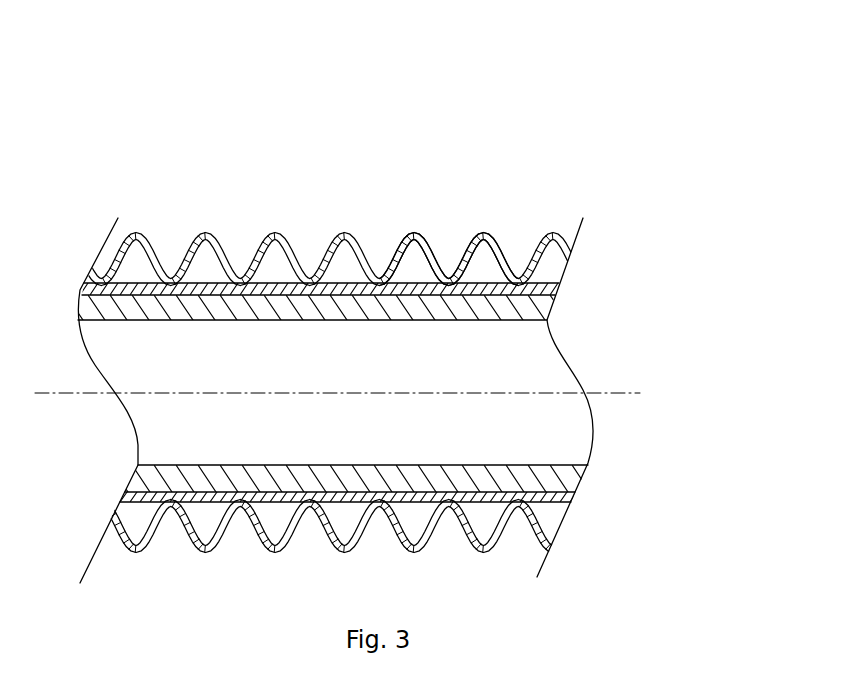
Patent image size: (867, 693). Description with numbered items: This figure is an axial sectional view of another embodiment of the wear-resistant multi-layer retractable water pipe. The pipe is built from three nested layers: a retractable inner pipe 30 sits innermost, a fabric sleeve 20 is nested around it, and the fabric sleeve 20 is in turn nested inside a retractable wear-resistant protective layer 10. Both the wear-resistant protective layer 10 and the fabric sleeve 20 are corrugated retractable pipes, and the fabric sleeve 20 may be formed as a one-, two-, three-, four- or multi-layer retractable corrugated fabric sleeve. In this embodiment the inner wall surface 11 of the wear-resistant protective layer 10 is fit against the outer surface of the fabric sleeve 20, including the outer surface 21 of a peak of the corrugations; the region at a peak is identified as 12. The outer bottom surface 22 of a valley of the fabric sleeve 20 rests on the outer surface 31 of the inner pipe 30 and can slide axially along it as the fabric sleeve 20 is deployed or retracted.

The wear-resistant protective layer 10 is at (292, 248).
The inner wall surface 11 is at (410, 320).
The trough of corrugation 12 is at (475, 263).
The fabric sleeve 20 is at (134, 285).
The outer surface of a peak 21 is at (195, 282).
The outer bottom surface of a valley 22 is at (240, 308).
The retractable inner pipe 30 is at (497, 307).
The outer surface of the inner pipe 31 is at (542, 272).